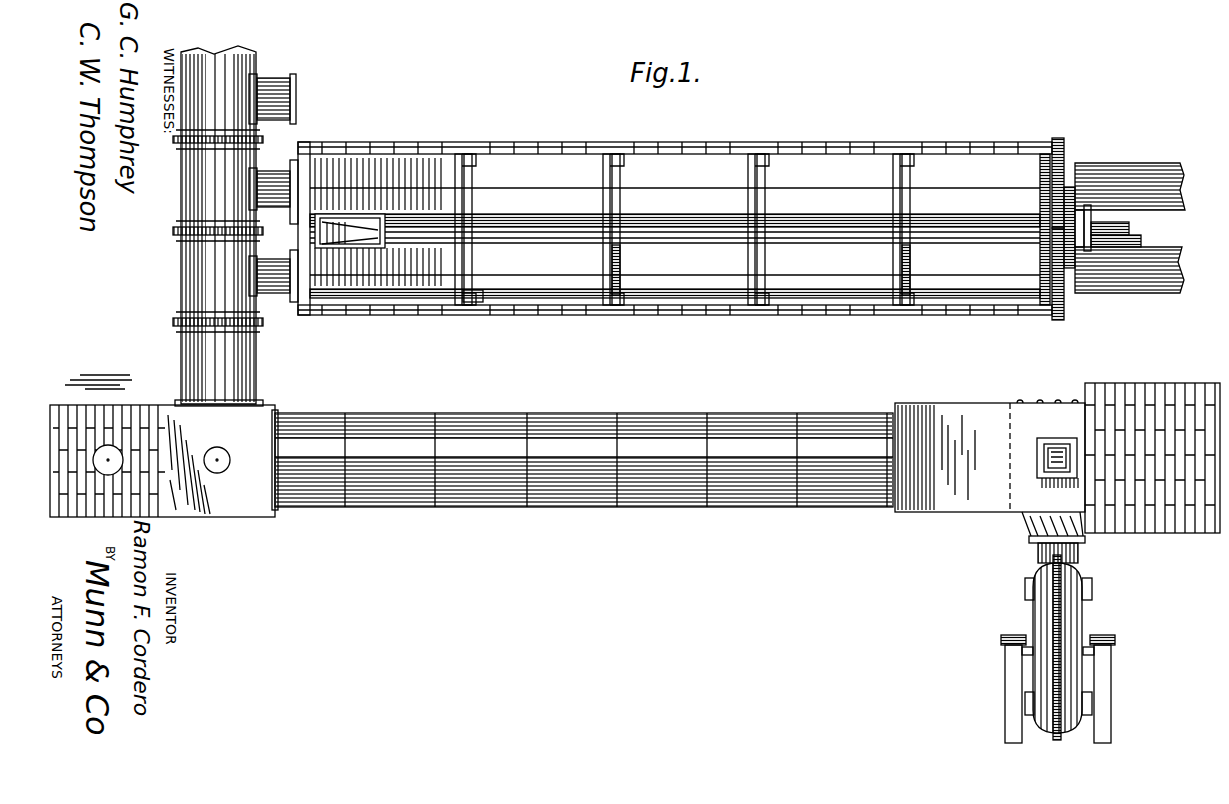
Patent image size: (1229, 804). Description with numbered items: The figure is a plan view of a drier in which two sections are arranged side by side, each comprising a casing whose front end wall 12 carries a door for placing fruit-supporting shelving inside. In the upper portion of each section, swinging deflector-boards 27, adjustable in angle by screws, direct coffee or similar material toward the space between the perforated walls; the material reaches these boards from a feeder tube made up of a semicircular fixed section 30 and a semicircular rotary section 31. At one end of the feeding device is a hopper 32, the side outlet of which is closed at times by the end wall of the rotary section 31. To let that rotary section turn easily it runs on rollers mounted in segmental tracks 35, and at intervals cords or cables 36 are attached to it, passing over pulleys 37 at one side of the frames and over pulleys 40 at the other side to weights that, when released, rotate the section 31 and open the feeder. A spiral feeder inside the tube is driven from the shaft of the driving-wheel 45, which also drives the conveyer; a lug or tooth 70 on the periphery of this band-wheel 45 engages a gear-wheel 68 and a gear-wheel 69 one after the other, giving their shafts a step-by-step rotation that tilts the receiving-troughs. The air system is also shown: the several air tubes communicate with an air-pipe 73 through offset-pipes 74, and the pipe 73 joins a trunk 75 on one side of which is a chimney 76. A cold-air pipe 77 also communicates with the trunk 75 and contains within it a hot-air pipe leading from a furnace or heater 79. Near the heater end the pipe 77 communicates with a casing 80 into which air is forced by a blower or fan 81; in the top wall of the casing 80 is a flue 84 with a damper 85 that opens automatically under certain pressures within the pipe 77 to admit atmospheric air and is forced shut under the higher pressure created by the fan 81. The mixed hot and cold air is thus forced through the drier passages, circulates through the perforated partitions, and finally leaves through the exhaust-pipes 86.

The end wall 12 is at (300, 215).
The swinging deflector-boards 27 is at (570, 222).
The semicircular fixed section 30 is at (684, 250).
The semicircular rotary section 31 is at (700, 222).
The hopper 32 is at (385, 216).
The segmental tracks 35 is at (618, 215).
The cords or cables 36 is at (620, 260).
The pulleys 37 is at (773, 157).
The pulleys 40 is at (482, 298).
The driving-wheel 45 is at (1085, 192).
The gear-wheel 68 is at (1064, 318).
The gear-wheel 69 is at (1064, 146).
The lug or tooth 70 is at (1070, 190).
The air-pipe 73 is at (183, 293).
The offset-pipes 74 is at (277, 170).
The trunk 75 is at (189, 518).
The chimney 76 is at (121, 516).
The cold-air pipe 77 is at (628, 508).
The furnace or heater 79 is at (1175, 383).
The casing 80 is at (950, 405).
The blower or fan 81 is at (1083, 612).
The flue 84 is at (1040, 478).
The damper 85 is at (1049, 446).
The exhaust-pipes 86 is at (1136, 246).